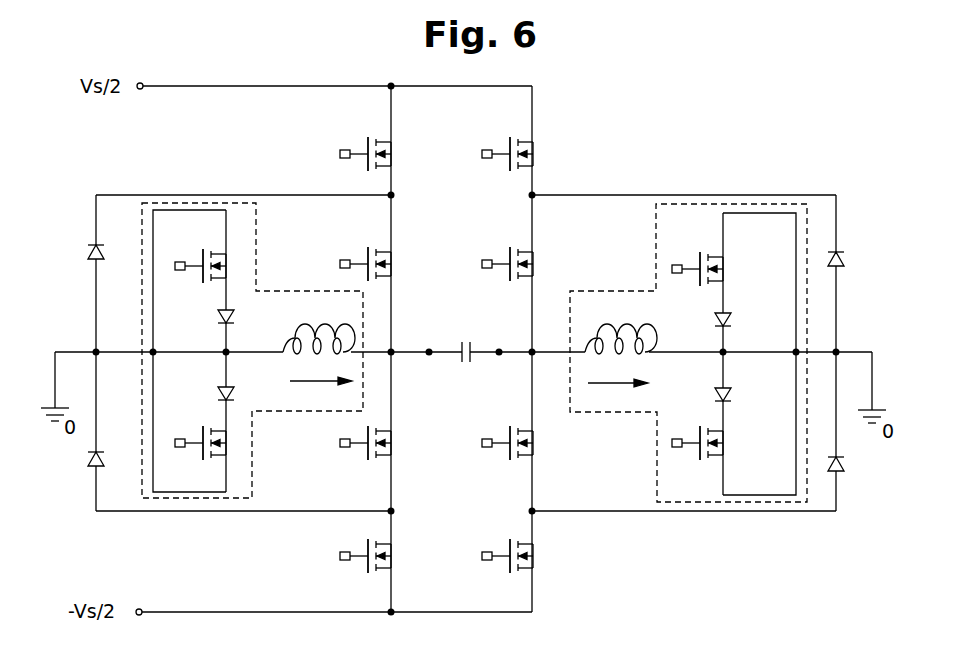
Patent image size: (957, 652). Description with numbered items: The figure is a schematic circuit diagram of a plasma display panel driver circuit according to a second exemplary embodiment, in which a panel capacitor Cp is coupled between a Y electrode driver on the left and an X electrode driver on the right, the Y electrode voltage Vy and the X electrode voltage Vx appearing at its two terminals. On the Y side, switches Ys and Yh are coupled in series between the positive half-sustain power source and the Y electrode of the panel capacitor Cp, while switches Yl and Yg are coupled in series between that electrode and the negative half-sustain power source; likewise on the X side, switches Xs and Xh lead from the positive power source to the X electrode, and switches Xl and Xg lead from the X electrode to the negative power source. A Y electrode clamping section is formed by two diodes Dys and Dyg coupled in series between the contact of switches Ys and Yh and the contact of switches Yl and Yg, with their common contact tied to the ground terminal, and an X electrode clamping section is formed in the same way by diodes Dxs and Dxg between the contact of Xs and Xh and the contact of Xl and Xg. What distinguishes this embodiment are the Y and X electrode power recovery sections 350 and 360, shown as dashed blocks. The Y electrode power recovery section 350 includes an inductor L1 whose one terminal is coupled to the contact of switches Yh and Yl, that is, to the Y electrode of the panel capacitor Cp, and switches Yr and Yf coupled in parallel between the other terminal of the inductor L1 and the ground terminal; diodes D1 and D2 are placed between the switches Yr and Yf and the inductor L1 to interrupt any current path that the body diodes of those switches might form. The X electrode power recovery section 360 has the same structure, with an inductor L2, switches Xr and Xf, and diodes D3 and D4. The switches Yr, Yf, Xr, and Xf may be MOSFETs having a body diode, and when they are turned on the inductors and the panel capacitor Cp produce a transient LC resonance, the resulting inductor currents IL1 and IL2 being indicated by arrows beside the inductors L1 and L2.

The Y electrode power recovery section 350 is at (283, 291).
The X electrode power recovery section 360 is at (605, 291).
The switch Ys is at (361, 146).
The switch Yh is at (361, 256).
The switch Yl is at (361, 451).
The switch Yg is at (361, 550).
The switch Xs is at (505, 146).
The switch Xh is at (505, 256).
The switch Xl is at (505, 433).
The switch Xg is at (505, 550).
The switch Yr is at (200, 260).
The switch Yf is at (198, 454).
The switch Xr is at (697, 261).
The switch Xf is at (696, 453).
The diode D1 is at (212, 316).
The diode D2 is at (212, 395).
The diode D3 is at (708, 314).
The diode D4 is at (708, 396).
The diode Dys is at (76, 251).
The diode Dyg is at (76, 462).
The diode Dxs is at (856, 261).
The diode Dxg is at (857, 469).
The inductor L1 is at (319, 332).
The inductor L2 is at (621, 333).
The current of inductor L1 IL1 is at (319, 392).
The current of inductor L2 IL2 is at (617, 394).
The panel capacitor Cp is at (466, 339).
The Y electrode voltage Vy is at (426, 340).
The X electrode voltage Vx is at (503, 340).